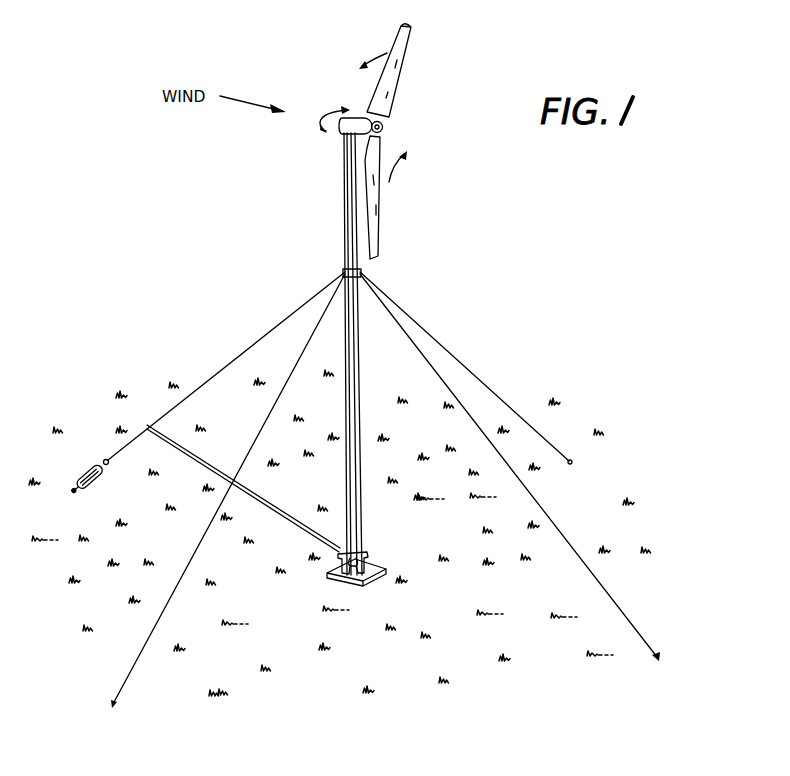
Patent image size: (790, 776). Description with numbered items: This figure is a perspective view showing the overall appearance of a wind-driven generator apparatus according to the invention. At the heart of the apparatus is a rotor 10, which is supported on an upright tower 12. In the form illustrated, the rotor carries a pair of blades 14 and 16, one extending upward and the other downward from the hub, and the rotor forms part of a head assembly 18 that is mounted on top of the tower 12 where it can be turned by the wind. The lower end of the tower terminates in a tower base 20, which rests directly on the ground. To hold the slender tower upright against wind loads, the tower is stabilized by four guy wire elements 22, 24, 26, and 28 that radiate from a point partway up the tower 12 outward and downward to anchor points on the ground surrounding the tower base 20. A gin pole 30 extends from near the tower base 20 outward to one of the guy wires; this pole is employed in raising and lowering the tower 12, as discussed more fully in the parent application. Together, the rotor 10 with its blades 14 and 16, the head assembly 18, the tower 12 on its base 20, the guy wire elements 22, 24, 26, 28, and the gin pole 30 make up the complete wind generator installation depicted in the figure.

The rotor 10 is at (398, 122).
The tower 12 is at (367, 377).
The blade 14 is at (401, 53).
The blade 16 is at (378, 236).
The head assembly 18 is at (340, 133).
The tower base 20 is at (375, 552).
The guy wire element 22 is at (217, 373).
The guy wire element 24 is at (543, 505).
The guy wire element 26 is at (200, 541).
The guy wire element 28 is at (483, 380).
The gin pole 30 is at (224, 448).